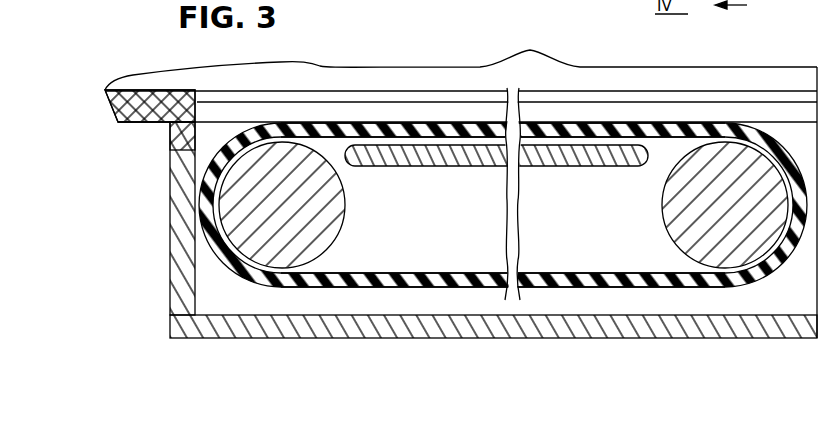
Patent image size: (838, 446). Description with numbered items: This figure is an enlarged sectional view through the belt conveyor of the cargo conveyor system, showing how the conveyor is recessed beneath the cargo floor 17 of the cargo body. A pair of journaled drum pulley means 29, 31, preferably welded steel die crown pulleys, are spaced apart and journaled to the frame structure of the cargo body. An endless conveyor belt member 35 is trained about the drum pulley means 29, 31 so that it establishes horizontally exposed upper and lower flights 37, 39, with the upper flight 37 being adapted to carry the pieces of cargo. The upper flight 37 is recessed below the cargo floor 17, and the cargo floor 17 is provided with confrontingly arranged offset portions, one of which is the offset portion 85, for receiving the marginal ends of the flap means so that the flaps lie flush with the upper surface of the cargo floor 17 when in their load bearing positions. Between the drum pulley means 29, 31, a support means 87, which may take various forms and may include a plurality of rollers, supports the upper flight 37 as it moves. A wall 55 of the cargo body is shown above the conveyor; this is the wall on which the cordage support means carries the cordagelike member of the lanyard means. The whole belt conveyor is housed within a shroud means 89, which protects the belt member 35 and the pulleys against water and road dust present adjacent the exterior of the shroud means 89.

The cargo floor 17 is at (113, 107).
The wall 55 is at (350, 82).
The upper flight 37 is at (620, 128).
The offset portion 85 is at (171, 147).
The endless conveyor belt member 35 is at (200, 204).
The drum pulley means 29 is at (336, 197).
The support means 87 is at (580, 158).
The drum pulley means 31 is at (670, 212).
The shroud means 89 is at (268, 302).
The lower flight 39 is at (470, 279).